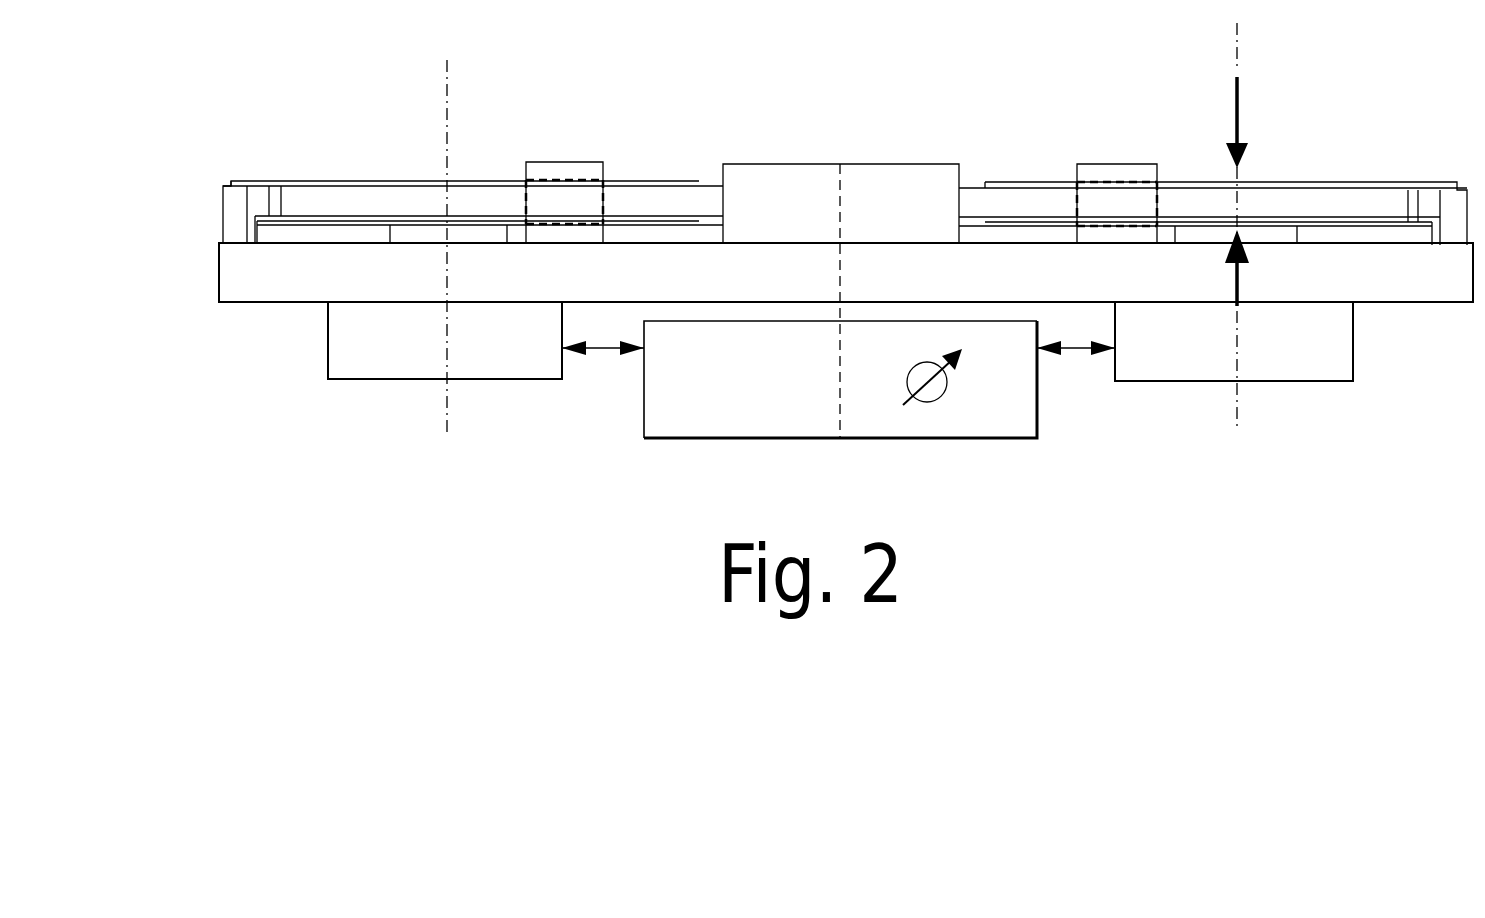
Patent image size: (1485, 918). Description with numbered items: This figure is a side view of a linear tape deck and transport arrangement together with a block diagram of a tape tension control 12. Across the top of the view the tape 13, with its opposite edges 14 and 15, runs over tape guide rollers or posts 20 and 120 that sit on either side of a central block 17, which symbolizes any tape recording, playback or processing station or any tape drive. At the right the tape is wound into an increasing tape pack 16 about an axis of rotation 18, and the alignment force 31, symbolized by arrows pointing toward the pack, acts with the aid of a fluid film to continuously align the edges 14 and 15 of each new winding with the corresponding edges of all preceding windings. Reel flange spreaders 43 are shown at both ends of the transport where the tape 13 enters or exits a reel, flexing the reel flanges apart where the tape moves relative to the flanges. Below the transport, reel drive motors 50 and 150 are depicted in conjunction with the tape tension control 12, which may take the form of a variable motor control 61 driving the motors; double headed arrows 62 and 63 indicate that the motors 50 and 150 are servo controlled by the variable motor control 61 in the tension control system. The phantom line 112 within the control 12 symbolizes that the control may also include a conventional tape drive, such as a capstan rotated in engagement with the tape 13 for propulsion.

The tape tension control 12 is at (776, 396).
The tape 13 is at (1015, 205).
The tape edge 14 is at (975, 192).
The tape edge 15 is at (973, 220).
The increasing tape pack 16 is at (1195, 170).
The block 17 is at (801, 222).
The axis of rotation 18 is at (1240, 42).
The tape guide roller or post 20 is at (1128, 164).
The alignment force 31 is at (1240, 106).
The reel flange spreader 43 is at (262, 196).
The reel drive motor 50 is at (1337, 358).
The variable motor control 61 is at (937, 402).
The double headed arrow 62 is at (1073, 352).
The double headed arrow 63 is at (600, 352).
The phantom line 112 is at (835, 388).
The tape guide roller or post 120 is at (569, 163).
The reel drive motor 150 is at (358, 330).